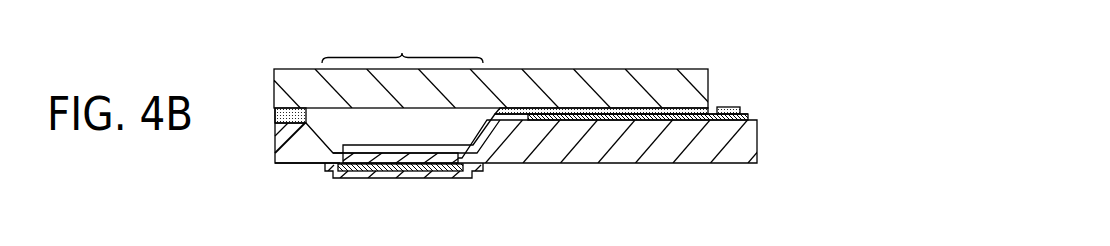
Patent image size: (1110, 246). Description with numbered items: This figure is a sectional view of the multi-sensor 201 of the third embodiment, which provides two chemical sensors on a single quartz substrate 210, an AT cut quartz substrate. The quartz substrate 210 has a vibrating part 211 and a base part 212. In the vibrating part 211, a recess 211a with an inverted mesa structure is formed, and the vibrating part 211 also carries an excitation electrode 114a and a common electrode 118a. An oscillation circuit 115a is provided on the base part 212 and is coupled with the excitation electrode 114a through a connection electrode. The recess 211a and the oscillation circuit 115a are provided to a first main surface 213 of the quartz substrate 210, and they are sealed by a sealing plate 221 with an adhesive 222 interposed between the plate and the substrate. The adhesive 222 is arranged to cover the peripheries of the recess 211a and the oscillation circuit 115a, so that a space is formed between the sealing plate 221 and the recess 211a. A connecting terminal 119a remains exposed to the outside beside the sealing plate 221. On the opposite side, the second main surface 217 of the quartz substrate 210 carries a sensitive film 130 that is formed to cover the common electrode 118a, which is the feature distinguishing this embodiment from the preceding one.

The multi-sensor 201 is at (757, 28).
The quartz substrate 210 is at (765, 137).
The vibrating part 211 is at (363, 158).
The recess 211a is at (402, 45).
The base part 212 is at (662, 150).
The first main surface 213 is at (275, 143).
The second main surface 217 is at (288, 164).
The sealing plate 221 is at (612, 80).
The adhesive 222 is at (274, 115).
The excitation electrode 114a is at (372, 146).
The oscillation circuit 115a is at (588, 121).
The common electrode 118a is at (407, 167).
The connecting terminal 119a is at (747, 87).
The sensitive film 130 is at (453, 176).